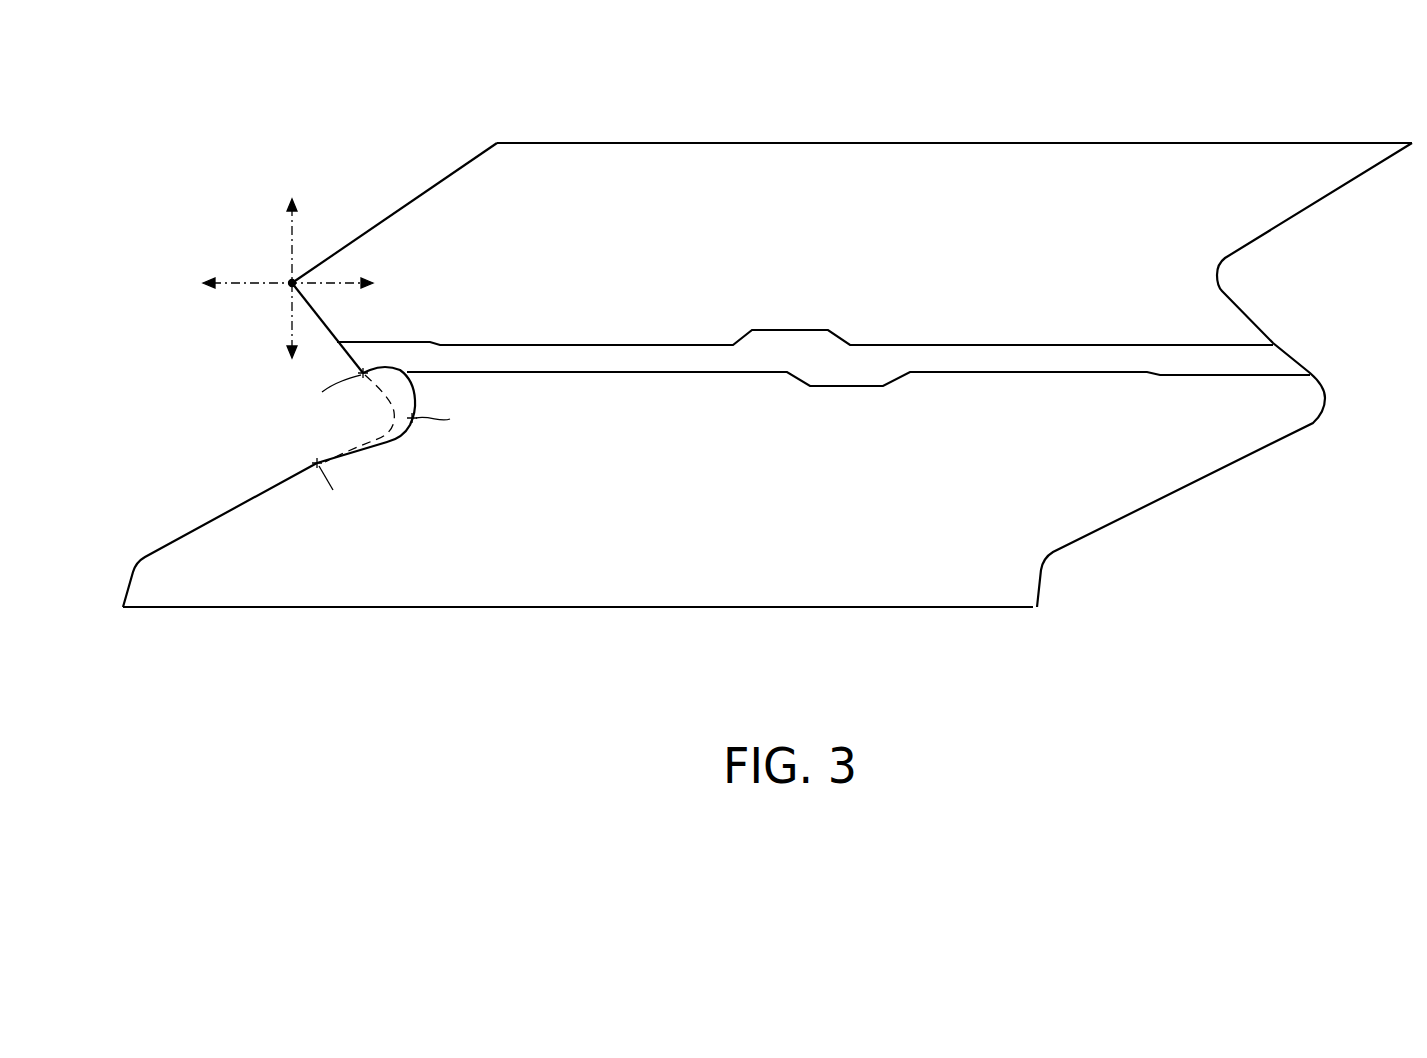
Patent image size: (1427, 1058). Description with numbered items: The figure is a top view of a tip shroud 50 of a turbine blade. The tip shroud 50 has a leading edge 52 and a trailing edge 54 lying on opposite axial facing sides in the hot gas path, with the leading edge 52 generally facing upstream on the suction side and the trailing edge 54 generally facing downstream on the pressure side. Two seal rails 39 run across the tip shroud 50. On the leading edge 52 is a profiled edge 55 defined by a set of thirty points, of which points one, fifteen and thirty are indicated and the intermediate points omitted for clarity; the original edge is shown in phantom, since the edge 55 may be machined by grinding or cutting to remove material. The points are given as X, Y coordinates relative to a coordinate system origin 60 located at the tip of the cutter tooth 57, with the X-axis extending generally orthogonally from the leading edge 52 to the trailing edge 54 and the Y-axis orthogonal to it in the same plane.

The tip shroud 50 is at (305, 178).
The trailing edge 54 is at (858, 141).
The leading edge 52 is at (983, 608).
The cutter tooth 57 is at (296, 281).
The coordinate system origin 60 is at (287, 293).
The seal rails 39 is at (826, 346).
The edge 55 is at (405, 440).